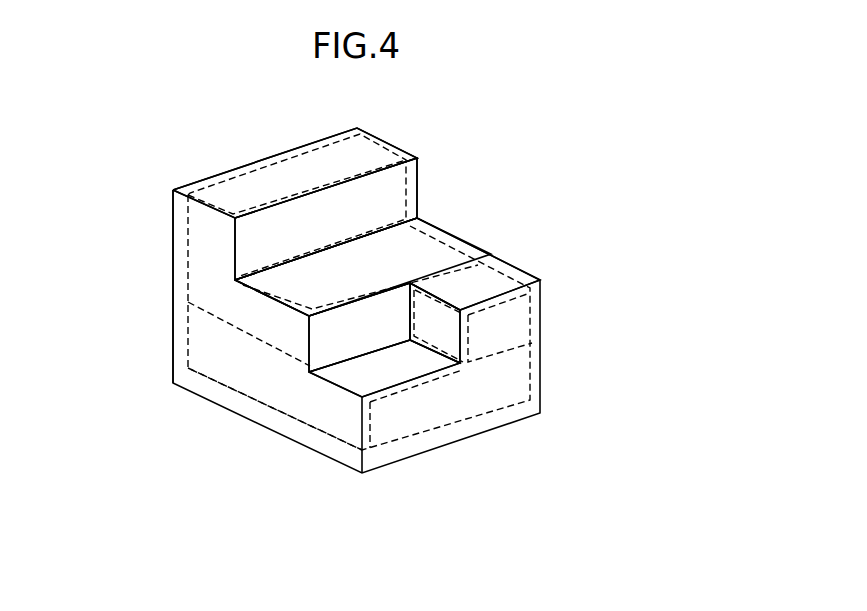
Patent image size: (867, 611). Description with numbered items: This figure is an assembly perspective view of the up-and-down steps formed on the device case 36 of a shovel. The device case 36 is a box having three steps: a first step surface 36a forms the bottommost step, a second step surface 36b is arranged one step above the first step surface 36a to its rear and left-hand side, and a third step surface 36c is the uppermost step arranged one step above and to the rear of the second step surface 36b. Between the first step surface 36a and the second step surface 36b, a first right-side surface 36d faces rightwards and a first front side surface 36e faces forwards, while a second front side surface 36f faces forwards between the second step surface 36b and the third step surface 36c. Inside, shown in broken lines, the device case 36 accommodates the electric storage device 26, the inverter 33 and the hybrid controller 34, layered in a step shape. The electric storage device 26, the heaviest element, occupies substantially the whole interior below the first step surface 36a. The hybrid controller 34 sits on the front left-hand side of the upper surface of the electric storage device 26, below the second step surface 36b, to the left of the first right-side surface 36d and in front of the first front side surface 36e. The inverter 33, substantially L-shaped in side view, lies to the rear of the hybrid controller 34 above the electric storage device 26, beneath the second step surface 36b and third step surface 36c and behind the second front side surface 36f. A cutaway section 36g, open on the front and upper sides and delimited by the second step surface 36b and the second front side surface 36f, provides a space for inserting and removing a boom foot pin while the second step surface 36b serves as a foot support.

The electric storage device 26 is at (232, 371).
The inverter 33 is at (188, 235).
The hybrid controller 34 is at (545, 325).
The device case 36 is at (268, 430).
The first step surface 36a is at (387, 372).
The second step surface 36b is at (425, 243).
The third step surface 36c is at (300, 157).
The first right-side surface 36d is at (440, 330).
The first front side surface 36e is at (345, 326).
The second front side surface 36f is at (385, 200).
The cutaway section 36g is at (470, 185).